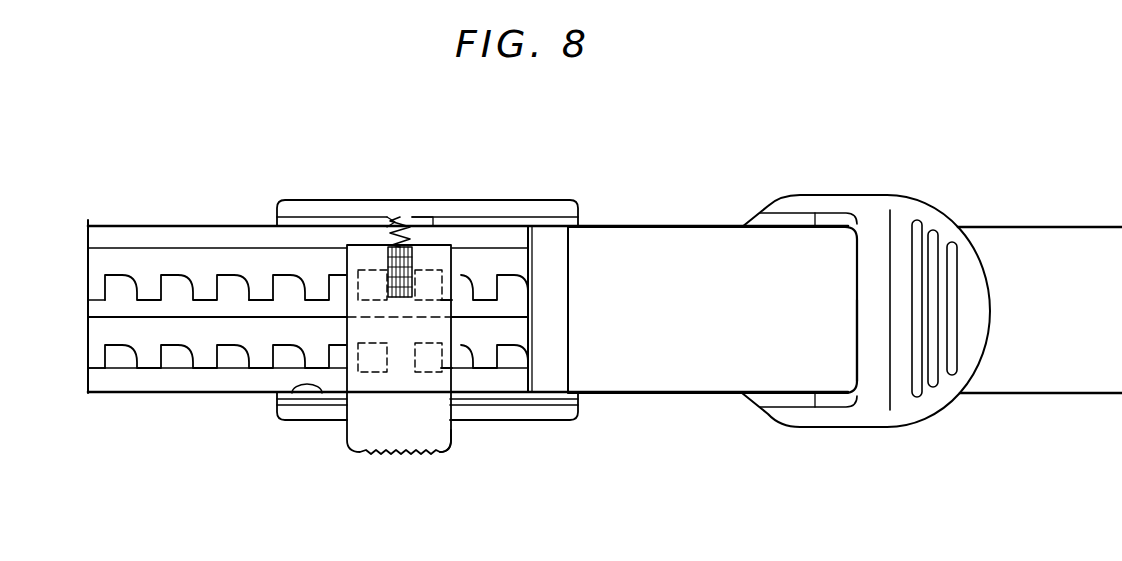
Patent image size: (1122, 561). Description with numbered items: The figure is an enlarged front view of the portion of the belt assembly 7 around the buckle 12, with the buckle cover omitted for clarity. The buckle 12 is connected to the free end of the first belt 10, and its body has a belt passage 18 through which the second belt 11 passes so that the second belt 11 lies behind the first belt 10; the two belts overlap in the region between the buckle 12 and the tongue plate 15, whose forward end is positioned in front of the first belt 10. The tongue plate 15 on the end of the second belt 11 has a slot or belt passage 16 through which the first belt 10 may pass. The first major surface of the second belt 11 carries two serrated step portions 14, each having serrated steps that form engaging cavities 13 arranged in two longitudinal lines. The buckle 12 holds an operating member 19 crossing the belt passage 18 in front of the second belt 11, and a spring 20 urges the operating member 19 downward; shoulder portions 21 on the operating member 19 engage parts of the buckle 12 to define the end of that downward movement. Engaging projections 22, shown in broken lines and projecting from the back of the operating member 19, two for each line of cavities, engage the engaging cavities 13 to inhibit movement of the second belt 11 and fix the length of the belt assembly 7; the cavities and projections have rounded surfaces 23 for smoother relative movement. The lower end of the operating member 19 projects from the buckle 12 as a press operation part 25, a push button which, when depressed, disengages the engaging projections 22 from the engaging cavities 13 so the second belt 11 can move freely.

The belt assembly 7 is at (658, 128).
The first belt 10 is at (1034, 224).
The second belt 11 is at (167, 221).
The buckle 12 is at (307, 196).
The engaging cavities 13 is at (205, 287).
The serrated step portions 14 is at (127, 248).
The tongue plate 15 is at (902, 196).
The belt passage 16 is at (853, 346).
The belt passage 18 is at (298, 397).
The operating member 19 is at (448, 452).
The spring 20 is at (432, 222).
The shoulder portions 21 is at (337, 420).
The engaging projections 22 is at (368, 270).
The rounded surfaces 23 is at (243, 272).
The press operation part 25 is at (368, 441).